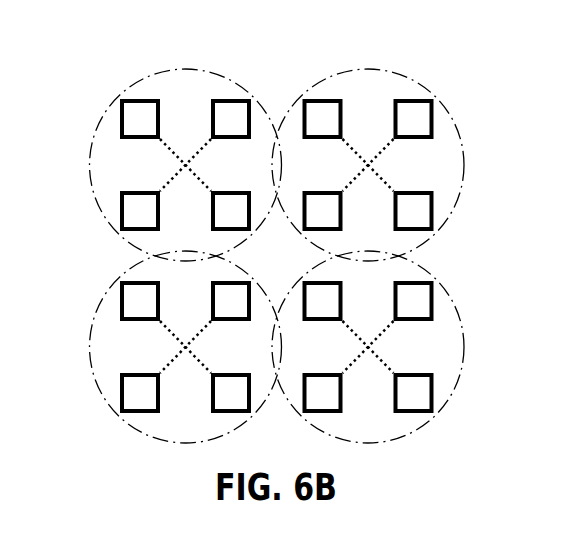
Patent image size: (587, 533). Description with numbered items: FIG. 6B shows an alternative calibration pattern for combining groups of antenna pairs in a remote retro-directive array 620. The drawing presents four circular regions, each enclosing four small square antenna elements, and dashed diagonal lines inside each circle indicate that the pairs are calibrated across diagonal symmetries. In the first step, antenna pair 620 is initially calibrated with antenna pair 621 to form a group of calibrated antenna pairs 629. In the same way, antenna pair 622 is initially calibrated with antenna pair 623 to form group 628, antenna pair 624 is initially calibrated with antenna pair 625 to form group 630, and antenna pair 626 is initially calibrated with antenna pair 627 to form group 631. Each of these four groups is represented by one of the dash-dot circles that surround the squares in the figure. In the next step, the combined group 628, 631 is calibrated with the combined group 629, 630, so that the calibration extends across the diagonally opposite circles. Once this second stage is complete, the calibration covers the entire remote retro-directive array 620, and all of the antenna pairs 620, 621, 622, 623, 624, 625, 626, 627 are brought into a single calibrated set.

The antenna pair 620 is at (297, 44).
The antenna pair 621 is at (228, 165).
The antenna pair 622 is at (324, 165).
The antenna pair 623 is at (411, 165).
The antenna pair 624 is at (141, 347).
The antenna pair 625 is at (228, 347).
The antenna pair 626 is at (324, 347).
The antenna pair 627 is at (411, 347).
The group of calibrated antenna pairs 628 is at (163, 165).
The group of calibrated antenna pairs 629 is at (387, 165).
The group of calibrated antenna pairs 630 is at (163, 347).
The group of calibrated antenna pairs 631 is at (387, 347).